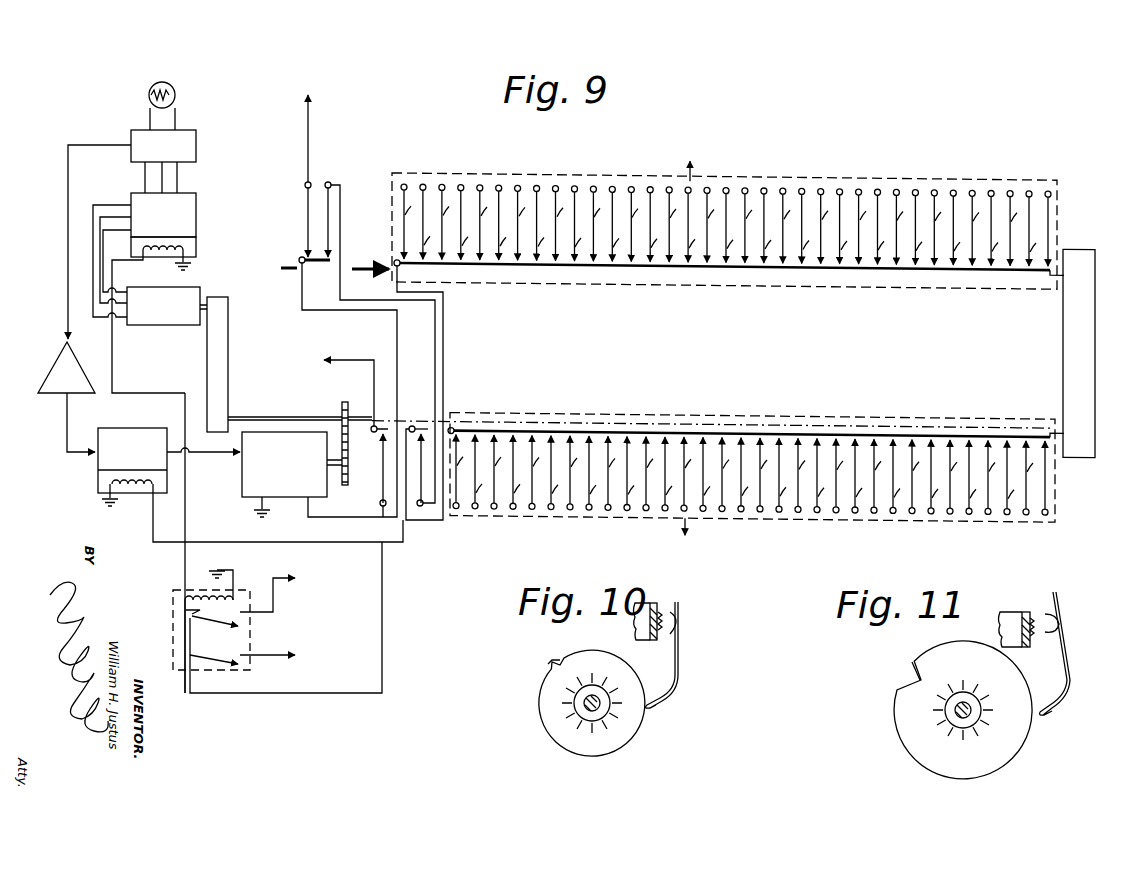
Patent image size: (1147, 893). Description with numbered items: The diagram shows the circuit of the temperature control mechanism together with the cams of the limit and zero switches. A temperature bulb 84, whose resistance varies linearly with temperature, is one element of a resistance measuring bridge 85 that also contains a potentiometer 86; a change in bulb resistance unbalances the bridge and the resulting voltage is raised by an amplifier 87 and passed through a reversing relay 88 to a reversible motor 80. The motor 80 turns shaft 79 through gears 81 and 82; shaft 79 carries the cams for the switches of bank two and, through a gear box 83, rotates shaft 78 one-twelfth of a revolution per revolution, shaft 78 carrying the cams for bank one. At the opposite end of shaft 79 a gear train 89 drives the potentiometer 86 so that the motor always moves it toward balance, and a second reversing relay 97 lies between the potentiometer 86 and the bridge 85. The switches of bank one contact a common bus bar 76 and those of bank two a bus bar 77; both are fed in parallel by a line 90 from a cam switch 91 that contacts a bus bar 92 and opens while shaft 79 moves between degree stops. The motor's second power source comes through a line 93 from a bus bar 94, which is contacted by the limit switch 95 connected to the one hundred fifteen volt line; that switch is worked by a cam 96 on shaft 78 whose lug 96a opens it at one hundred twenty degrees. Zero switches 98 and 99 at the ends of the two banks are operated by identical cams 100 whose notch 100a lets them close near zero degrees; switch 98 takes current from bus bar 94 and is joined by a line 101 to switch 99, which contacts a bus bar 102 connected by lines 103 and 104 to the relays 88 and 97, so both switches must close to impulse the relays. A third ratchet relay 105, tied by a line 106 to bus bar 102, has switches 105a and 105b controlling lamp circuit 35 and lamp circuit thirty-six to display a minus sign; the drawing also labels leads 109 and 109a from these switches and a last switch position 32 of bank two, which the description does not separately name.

In FIG. 9, the temperature bulb 84 is at (176, 92).
In FIG. 9, the resistance measuring bridge 85 is at (197, 140).
In FIG. 9, the reversing relay 97 is at (197, 203).
In FIG. 9, the potentiometer 86 is at (200, 289).
In FIG. 9, the gear train 89 is at (228, 322).
In FIG. 9, the amplifier 87 is at (57, 355).
In FIG. 9, the reversing relay 88 is at (98, 462).
In FIG. 9, the reversible motor 80 is at (238, 482).
In FIG. 9, the gear 81 is at (346, 486).
In FIG. 9, the gear 82 is at (350, 434).
In FIG. 9, the shaft 79 is at (1050, 406).
In FIG. 9, the shaft 78 is at (358, 266).
In FIG. 10, the shaft 78 is at (589, 707).
In FIG. 11, the shaft 78 is at (960, 714).
In FIG. 9, the common bus bar 76 is at (601, 268).
In FIG. 9, the common bus bar 77 is at (748, 425).
In FIG. 9, the gear box 83 is at (1062, 347).
In FIG. 9, the lamp circuit 35 is at (1052, 222).
In FIG. 9, the switch contact 32 is at (1050, 492).
In FIG. 9, the line 90 is at (448, 366).
In FIG. 9, the cam switch 91 is at (380, 491).
In FIG. 9, the bus bar 92 is at (375, 424).
In FIG. 9, the line 93 is at (342, 513).
In FIG. 9, the bus bar 94 is at (306, 264).
In FIG. 10, the bus bar 94 is at (660, 606).
In FIG. 11, the bus bar 94 is at (1030, 610).
In FIG. 9, the limit switch 95 is at (310, 196).
In FIG. 10, the limit switch 95 is at (682, 648).
In FIG. 9, the zero switch 98 is at (341, 212).
In FIG. 11, the zero switch 98 is at (1078, 640).
In FIG. 9, the zero switch 99 is at (422, 507).
In FIG. 9, the line 101 is at (432, 383).
In FIG. 9, the bus bar 102 is at (414, 424).
In FIG. 9, the line 103 is at (146, 530).
In FIG. 9, the line 104 is at (187, 528).
In FIG. 9, the ratchet type relay 105 is at (234, 594).
In FIG. 9, the switch 105a is at (178, 610).
In FIG. 9, the switch 105b is at (224, 646).
In FIG. 9, the line 106 is at (183, 574).
In FIG. 9, the conductor to relay 35 109 is at (273, 612).
In FIG. 9, the conductor to relay 36 109a is at (283, 657).
In FIG. 10, the limit switch cam 96 is at (626, 736).
In FIG. 10, the lug 96a is at (547, 663).
In FIG. 11, the zero switch cam 100 is at (1013, 755).
In FIG. 11, the notch 100a is at (912, 667).